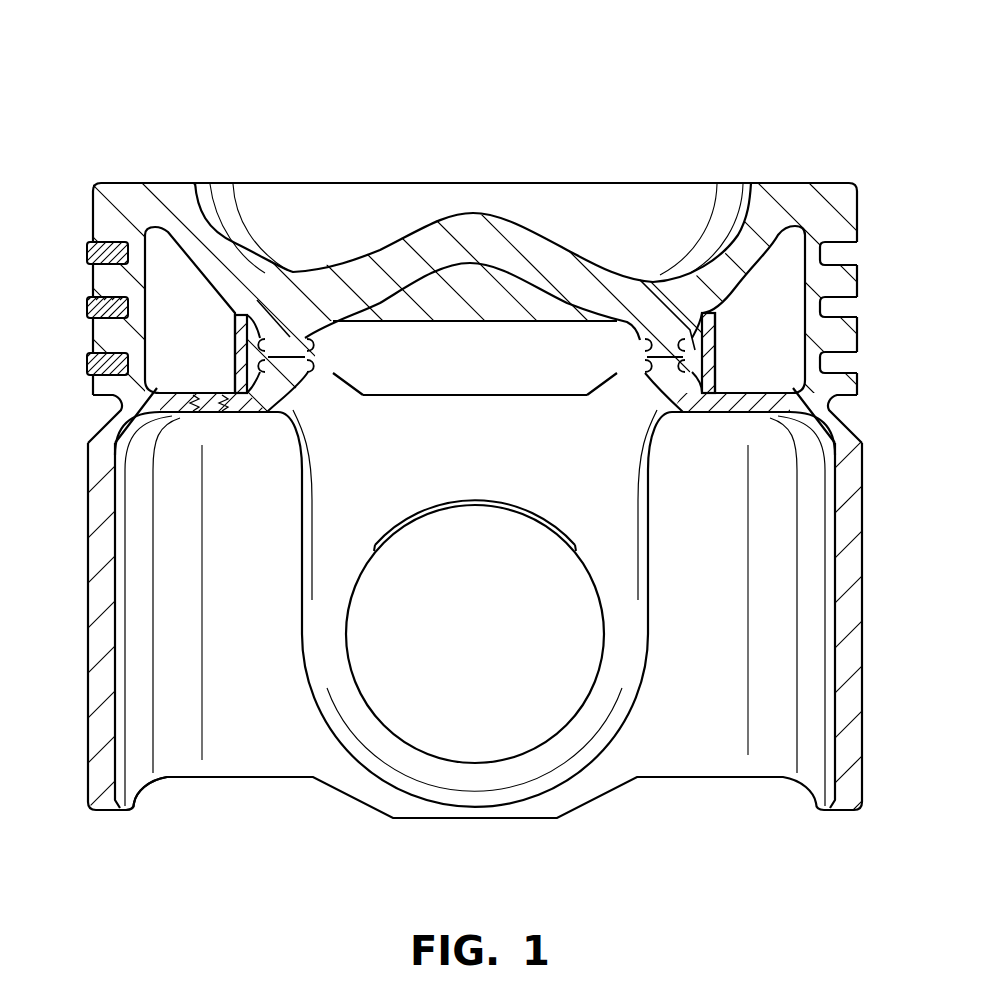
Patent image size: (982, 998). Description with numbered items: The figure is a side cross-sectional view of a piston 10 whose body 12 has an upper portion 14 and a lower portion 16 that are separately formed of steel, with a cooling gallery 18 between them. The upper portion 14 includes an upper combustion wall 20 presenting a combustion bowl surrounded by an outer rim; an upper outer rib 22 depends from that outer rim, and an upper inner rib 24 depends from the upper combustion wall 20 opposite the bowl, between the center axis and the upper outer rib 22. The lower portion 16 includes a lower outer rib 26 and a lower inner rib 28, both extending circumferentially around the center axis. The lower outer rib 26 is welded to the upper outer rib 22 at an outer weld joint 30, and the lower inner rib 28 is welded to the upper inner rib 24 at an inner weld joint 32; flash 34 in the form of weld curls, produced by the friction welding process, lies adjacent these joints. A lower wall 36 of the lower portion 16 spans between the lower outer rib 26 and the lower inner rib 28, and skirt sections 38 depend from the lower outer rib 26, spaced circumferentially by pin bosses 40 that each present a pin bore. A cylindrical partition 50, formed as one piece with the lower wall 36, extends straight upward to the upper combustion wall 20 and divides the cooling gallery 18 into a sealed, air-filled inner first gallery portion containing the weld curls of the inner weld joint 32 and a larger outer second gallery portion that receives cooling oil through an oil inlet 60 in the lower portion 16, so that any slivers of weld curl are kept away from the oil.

The piston 10 is at (732, 90).
The body 12 is at (868, 596).
The upper portion 14 is at (832, 178).
The lower portion 16 is at (80, 760).
The cooling gallery 18 is at (211, 357).
The upper combustion wall 20 is at (205, 237).
The upper outer rib 22 is at (125, 197).
The upper inner rib 24 is at (298, 330).
The lower outer rib 26 is at (130, 393).
The lower inner rib 28 is at (302, 383).
The outer weld joint 30 is at (147, 335).
The inner weld joint 32 is at (320, 350).
The flash 34 is at (752, 410).
The lower wall 36 is at (690, 408).
The skirt sections 38 is at (93, 605).
The pin bosses 40 is at (608, 673).
The partition 50 is at (247, 413).
The oil inlet 60 is at (205, 413).